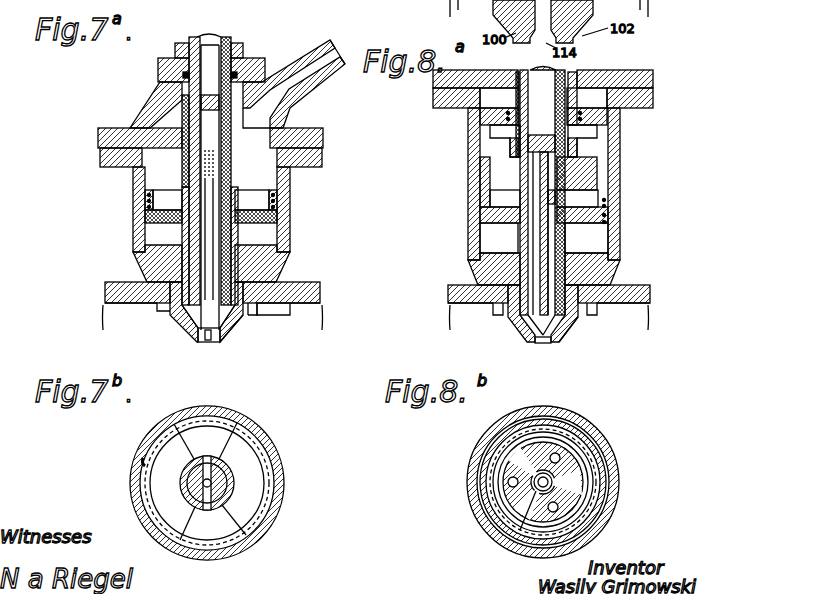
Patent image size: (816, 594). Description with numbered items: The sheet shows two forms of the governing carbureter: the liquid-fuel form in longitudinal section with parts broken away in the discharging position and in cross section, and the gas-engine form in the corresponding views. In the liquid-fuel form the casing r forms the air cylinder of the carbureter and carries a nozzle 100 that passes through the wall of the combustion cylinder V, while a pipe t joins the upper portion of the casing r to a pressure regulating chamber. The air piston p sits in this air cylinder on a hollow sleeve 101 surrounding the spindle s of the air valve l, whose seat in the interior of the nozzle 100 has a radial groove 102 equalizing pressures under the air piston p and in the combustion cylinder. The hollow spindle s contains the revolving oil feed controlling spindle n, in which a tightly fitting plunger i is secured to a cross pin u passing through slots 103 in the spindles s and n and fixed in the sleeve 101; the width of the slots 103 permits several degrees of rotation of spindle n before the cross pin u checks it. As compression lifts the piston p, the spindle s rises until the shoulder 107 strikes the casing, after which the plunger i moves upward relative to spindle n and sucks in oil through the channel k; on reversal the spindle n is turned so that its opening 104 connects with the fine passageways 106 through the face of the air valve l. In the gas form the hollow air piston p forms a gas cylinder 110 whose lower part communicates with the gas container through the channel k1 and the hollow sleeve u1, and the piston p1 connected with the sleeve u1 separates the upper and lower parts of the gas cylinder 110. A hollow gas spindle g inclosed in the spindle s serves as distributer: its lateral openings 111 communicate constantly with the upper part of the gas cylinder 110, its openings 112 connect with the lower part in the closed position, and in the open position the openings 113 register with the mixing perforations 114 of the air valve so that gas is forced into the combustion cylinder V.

In FIG. 7A, the oil feed controlling spindle n is at (216, 41).
In FIG. 7B, the oil feed controlling spindle n is at (180, 540).
In FIG. 7A, the shoulder 107 is at (240, 55).
In FIG. 7A, the cross pin u is at (184, 103).
In FIG. 7B, the cross pin u is at (237, 423).
In FIG. 7A, the pipe t is at (316, 86).
In FIG. 8A, the pipe t is at (612, 70).
In FIG. 7A, the spindle of the air valve s is at (140, 177).
In FIG. 8A, the spindle of the air valve s is at (527, 76).
In FIG. 7B, the spindle of the air valve s is at (182, 480).
In FIG. 8B, the spindle of the air valve s is at (532, 500).
In FIG. 7A, the hollow spindle or sleeve 101 is at (262, 181).
In FIG. 7B, the hollow spindle or sleeve 101 is at (186, 497).
In FIG. 7A, the casing r is at (140, 192).
In FIG. 8A, the casing r is at (470, 126).
In FIG. 7B, the casing r is at (268, 450).
In FIG. 8B, the casing r is at (482, 452).
In FIG. 7A, the air piston p is at (180, 226).
In FIG. 8A, the air piston p is at (490, 190).
In FIG. 7B, the air piston p is at (264, 512).
In FIG. 8B, the air piston p is at (572, 438).
In FIG. 7A, the plunger i is at (212, 238).
In FIG. 7B, the plunger i is at (174, 424).
In FIG. 7A, the wall of the combustion cylinder V is at (108, 290).
In FIG. 8A, the wall of the combustion cylinder V is at (458, 308).
In FIG. 7A, the channel k is at (266, 304).
In FIG. 7B, the channel k is at (234, 483).
In FIG. 7A, the opening 104 is at (176, 320).
In FIG. 7A, the nozzle 100 is at (188, 330).
In FIG. 8A, the nozzle 100 is at (516, 330).
In FIG. 7A, the fine passageways 106 is at (206, 342).
In FIG. 7A, the air valve l is at (215, 342).
In FIG. 7A, the radial groove 102 is at (240, 330).
In FIG. 8A, the radial groove 102 is at (582, 326).
In FIG. 8A, the gas spindle g is at (575, 76).
In FIG. 8B, the gas spindle g is at (538, 488).
In FIG. 8A, the lateral openings 111 is at (514, 150).
In FIG. 8B, the lateral openings 111 is at (585, 490).
In FIG. 8A, the hollow sleeve u1 is at (590, 150).
In FIG. 8B, the hollow sleeve u1 is at (583, 470).
In FIG. 8A, the piston p1 is at (604, 184).
In FIG. 8B, the piston p1 is at (585, 446).
In FIG. 8A, the openings 112 is at (558, 196).
In FIG. 8A, the gas cylinder 110 is at (590, 212).
In FIG. 8A, the channel k1 is at (484, 220).
In FIG. 8B, the channel k1 is at (508, 482).
In FIG. 8A, the openings 113 is at (562, 330).
In FIG. 8A, the mixing perforations 114 is at (540, 344).
In FIG. 7B, the slots 103 is at (246, 535).